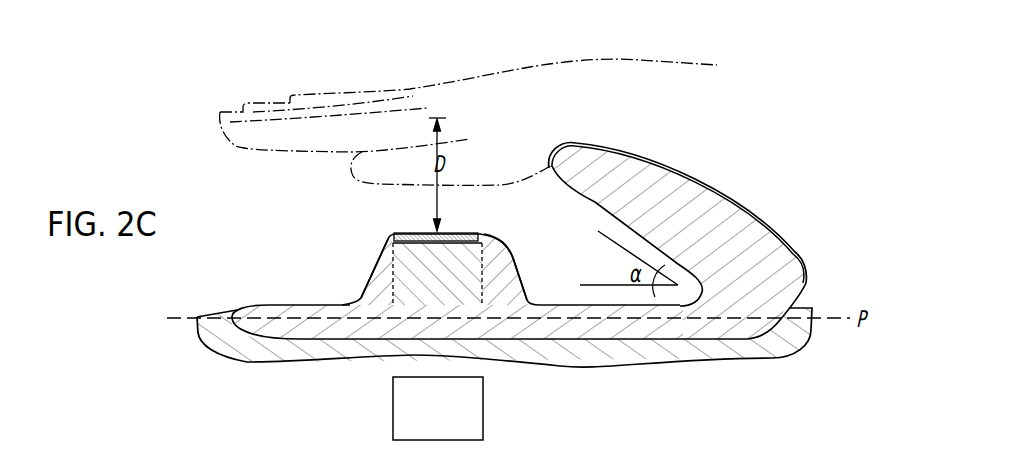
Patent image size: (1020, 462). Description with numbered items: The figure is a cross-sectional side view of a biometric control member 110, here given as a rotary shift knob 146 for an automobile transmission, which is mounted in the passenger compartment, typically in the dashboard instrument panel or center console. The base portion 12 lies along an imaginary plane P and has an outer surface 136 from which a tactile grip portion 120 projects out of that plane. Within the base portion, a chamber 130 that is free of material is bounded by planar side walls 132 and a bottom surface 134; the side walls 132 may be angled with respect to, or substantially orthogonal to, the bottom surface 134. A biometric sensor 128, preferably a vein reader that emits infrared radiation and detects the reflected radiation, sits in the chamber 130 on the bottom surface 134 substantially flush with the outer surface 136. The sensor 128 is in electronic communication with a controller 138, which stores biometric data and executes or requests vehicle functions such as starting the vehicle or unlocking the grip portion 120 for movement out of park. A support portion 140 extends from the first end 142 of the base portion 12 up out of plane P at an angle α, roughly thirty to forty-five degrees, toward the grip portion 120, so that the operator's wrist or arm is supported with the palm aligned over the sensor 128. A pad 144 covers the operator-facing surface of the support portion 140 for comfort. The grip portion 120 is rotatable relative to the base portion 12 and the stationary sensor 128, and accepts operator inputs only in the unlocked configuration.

The base structure 12 is at (597, 312).
The biometric control member 110 is at (766, 165).
The grip portion 120 is at (373, 275).
The biometric sensor 128 is at (465, 232).
The chamber 130 is at (385, 248).
The planar side walls 132 is at (387, 241).
The bottom surface 134 is at (458, 245).
The outer surface 136 is at (267, 301).
The controller 138 is at (455, 421).
The support portion 140 is at (717, 240).
The first end 142 is at (795, 294).
The pad 144 is at (653, 165).
The rotary shift knob 146 is at (388, 220).